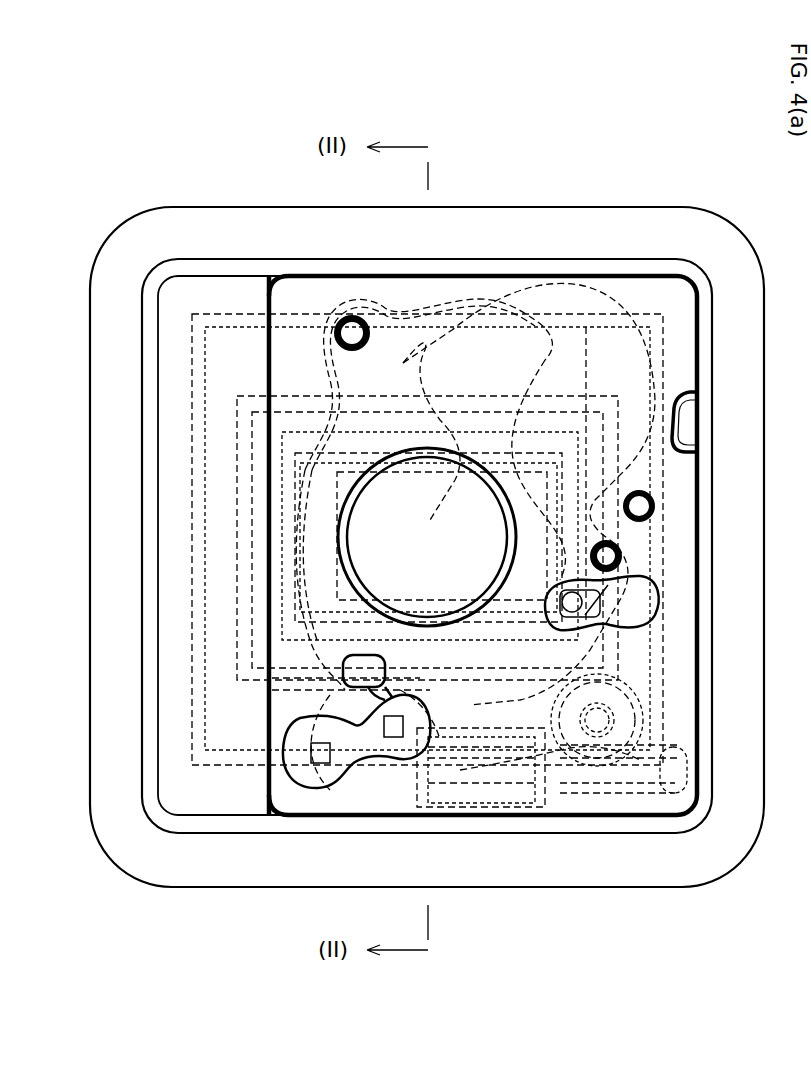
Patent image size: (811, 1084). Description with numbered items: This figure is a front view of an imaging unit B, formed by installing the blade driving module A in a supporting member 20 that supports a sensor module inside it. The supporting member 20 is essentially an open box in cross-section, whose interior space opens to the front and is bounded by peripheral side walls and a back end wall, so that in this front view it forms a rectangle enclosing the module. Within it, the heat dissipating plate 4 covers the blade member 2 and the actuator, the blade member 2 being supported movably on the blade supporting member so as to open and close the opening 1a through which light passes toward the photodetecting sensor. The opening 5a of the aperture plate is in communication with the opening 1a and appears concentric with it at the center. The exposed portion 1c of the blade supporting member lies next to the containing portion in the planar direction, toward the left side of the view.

The supporting member 20 is at (228, 207).
The exposed portion 1c is at (174, 527).
The heat dissipating plate 4 is at (307, 303).
The blade driving module A is at (658, 273).
The imaging unit B is at (630, 143).
The blade member 2 is at (513, 293).
The opening 1a is at (442, 538).
The opening 5a is at (372, 590).